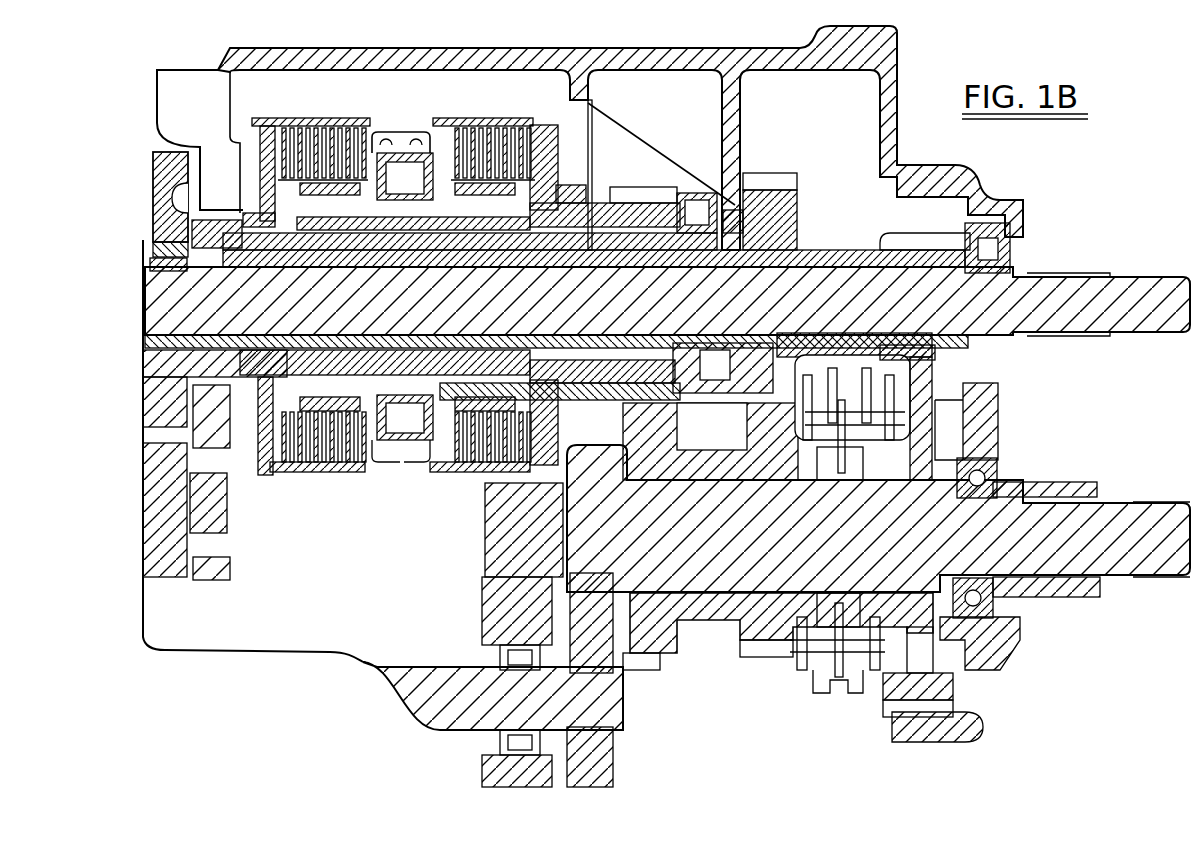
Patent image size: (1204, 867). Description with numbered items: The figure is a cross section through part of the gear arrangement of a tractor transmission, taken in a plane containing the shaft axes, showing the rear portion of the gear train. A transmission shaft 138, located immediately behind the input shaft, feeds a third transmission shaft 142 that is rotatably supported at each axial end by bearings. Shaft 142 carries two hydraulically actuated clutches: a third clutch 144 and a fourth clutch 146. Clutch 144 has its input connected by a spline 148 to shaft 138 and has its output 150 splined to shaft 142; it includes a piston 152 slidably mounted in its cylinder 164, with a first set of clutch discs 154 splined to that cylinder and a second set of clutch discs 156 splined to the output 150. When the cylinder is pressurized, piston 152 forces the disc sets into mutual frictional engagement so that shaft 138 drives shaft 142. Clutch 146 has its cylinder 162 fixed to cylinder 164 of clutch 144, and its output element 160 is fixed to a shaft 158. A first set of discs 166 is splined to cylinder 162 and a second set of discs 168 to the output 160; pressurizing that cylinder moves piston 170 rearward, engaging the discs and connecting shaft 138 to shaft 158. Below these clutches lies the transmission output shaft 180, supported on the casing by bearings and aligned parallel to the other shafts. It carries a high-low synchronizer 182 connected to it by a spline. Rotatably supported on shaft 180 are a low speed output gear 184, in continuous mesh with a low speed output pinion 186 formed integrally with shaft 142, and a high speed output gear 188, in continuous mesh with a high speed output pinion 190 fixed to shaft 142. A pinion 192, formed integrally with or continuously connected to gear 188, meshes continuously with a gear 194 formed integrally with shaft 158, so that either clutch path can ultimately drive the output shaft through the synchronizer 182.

The transmission shaft 138 is at (153, 187).
The third transmission shaft 142 is at (600, 340).
The third hydraulically actuated clutch 144 is at (285, 106).
The fourth hydraulically actuated clutch 146 is at (556, 102).
The spline 148 is at (240, 195).
The output of clutch 144 150 is at (283, 190).
The piston 152 is at (373, 147).
The first set of clutch discs 154 is at (305, 128).
The second set of clutch discs 156 is at (338, 128).
The shaft 158 is at (590, 203).
The output element of clutch 146 160 is at (557, 203).
The cylinder of clutch 146 162 is at (432, 460).
The cylinder of clutch 144 164 is at (363, 462).
The first set of discs 166 is at (480, 128).
The second set of discs 168 is at (518, 128).
The piston 170 is at (438, 133).
The transmission output shaft 180 is at (517, 537).
The high-low synchronizer 182 is at (830, 702).
The low speed output gear 184 is at (947, 710).
The low speed output pinion 186 is at (922, 247).
The high speed output gear 188 is at (747, 447).
The high speed output pinion 190 is at (793, 210).
The pinion 192 is at (660, 668).
The gear 194 is at (662, 188).